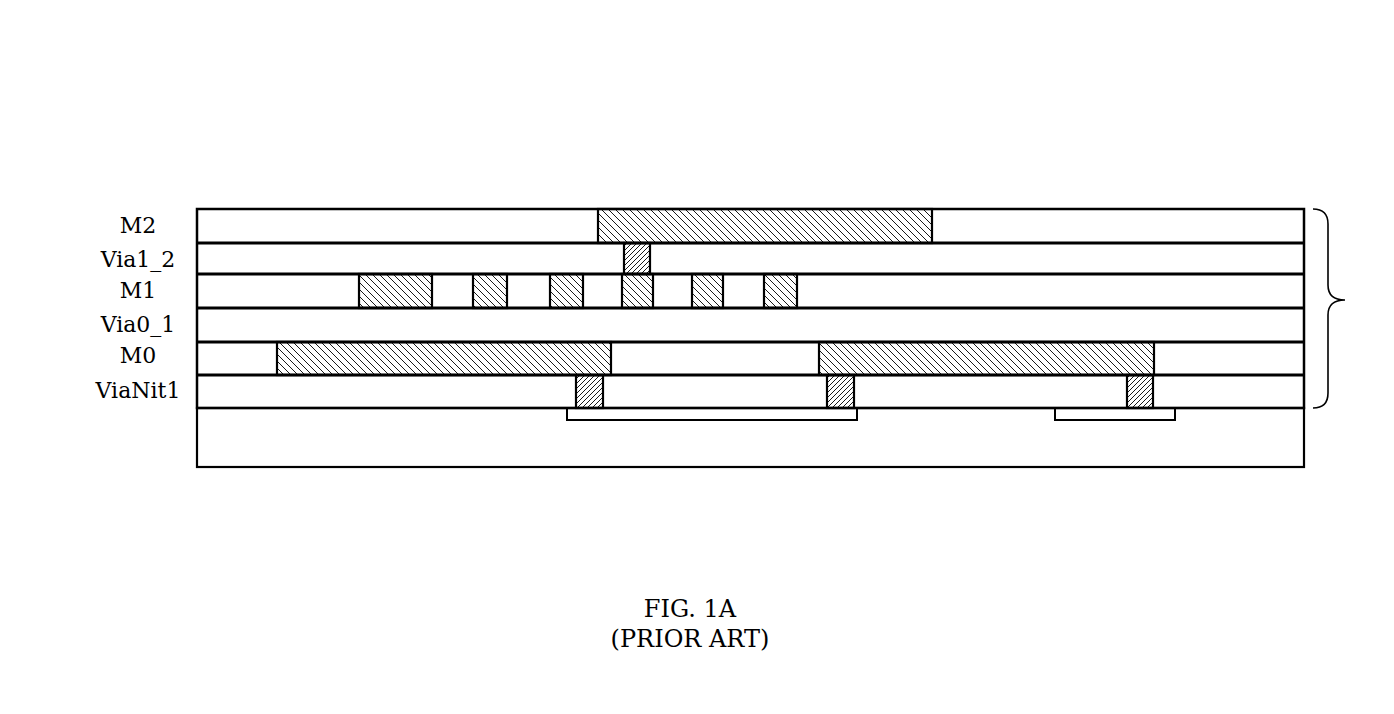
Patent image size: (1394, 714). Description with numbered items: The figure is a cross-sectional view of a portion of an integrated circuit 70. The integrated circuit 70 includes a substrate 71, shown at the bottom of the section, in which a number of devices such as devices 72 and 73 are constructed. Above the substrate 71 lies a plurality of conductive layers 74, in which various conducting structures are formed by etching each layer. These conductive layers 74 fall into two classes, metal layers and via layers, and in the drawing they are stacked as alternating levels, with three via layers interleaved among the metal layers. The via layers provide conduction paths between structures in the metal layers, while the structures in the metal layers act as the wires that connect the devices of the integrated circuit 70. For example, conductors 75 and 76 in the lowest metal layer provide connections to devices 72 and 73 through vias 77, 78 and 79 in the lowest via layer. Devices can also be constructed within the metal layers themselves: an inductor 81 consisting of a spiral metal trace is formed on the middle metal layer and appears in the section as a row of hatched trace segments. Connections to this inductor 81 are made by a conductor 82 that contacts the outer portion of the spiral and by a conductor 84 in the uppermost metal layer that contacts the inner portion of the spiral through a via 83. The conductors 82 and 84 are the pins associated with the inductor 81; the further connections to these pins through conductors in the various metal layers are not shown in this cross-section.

The integrated circuit 70 is at (226, 109).
The substrate 71 is at (256, 458).
The device 72 is at (833, 414).
The device 73 is at (1160, 414).
The conductive layers 74 is at (1348, 308).
The conductor 75 is at (390, 355).
The conductor 76 is at (967, 355).
The via 77 is at (601, 390).
The via 78 is at (826, 393).
The via 79 is at (1150, 390).
The inductor 81 is at (783, 283).
The conductor 82 is at (370, 288).
The via 83 is at (651, 255).
The conductor 84 is at (798, 218).